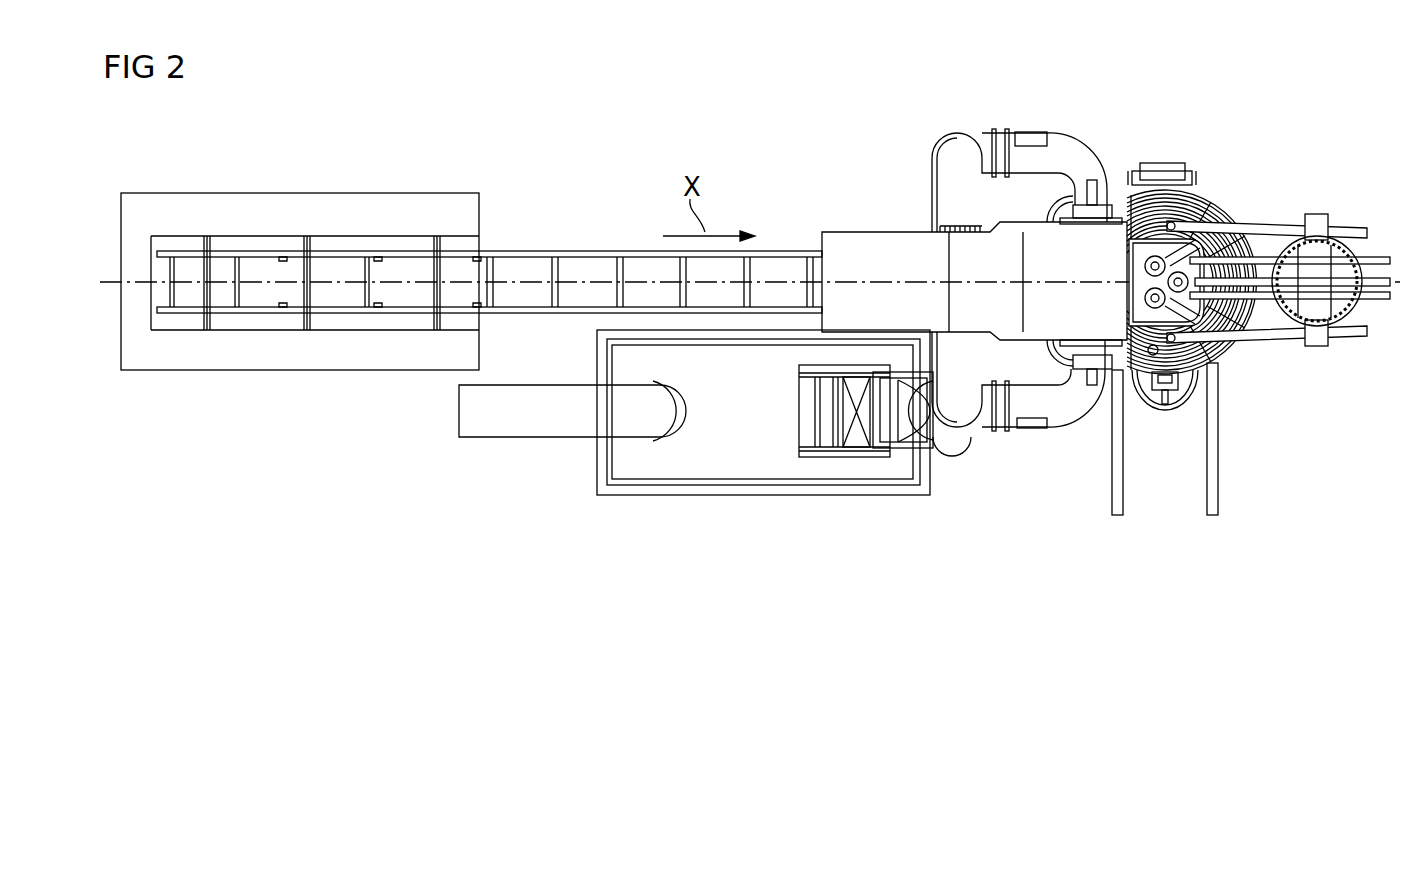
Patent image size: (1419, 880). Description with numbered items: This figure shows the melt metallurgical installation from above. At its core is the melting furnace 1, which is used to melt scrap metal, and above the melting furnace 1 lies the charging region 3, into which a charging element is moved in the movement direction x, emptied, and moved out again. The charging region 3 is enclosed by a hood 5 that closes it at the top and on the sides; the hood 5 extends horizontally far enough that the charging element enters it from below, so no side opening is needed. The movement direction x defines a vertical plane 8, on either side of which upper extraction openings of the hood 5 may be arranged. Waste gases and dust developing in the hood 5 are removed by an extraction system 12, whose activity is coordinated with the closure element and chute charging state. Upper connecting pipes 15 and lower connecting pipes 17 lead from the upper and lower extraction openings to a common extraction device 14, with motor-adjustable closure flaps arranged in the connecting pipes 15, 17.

The melting furnace 1 is at (1282, 187).
The charging region 3 is at (1086, 305).
The hood 5 is at (1011, 232).
The vertical plane 8 is at (590, 280).
The extraction system 12 is at (998, 267).
The extraction device 14 is at (752, 487).
The connecting pipes 15 is at (1057, 140).
The connecting pipes 17 is at (956, 205).